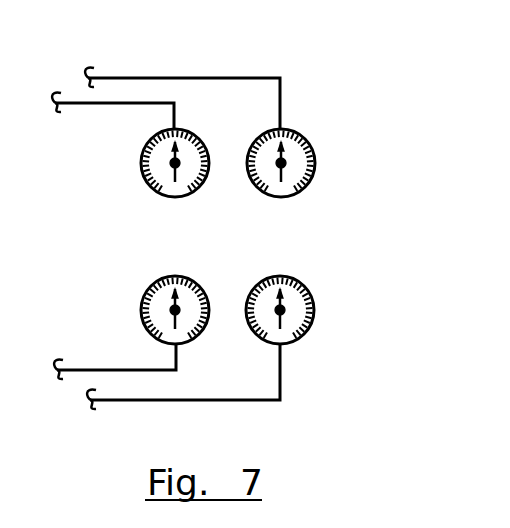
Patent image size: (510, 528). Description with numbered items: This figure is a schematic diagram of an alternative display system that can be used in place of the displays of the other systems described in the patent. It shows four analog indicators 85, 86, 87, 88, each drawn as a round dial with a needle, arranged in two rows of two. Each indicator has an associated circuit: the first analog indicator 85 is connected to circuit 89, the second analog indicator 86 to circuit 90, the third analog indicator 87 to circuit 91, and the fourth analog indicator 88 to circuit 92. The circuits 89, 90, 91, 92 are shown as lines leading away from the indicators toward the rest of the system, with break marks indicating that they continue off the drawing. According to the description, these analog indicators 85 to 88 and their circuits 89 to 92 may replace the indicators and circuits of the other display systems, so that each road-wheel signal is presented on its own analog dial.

The analog indicator 85 is at (140, 163).
The analog indicator 86 is at (314, 163).
The analog indicator 87 is at (140, 310).
The analog indicator 88 is at (314, 310).
The circuit 89 is at (176, 114).
The circuit 90 is at (282, 108).
The circuit 91 is at (177, 362).
The circuit 92 is at (282, 366).